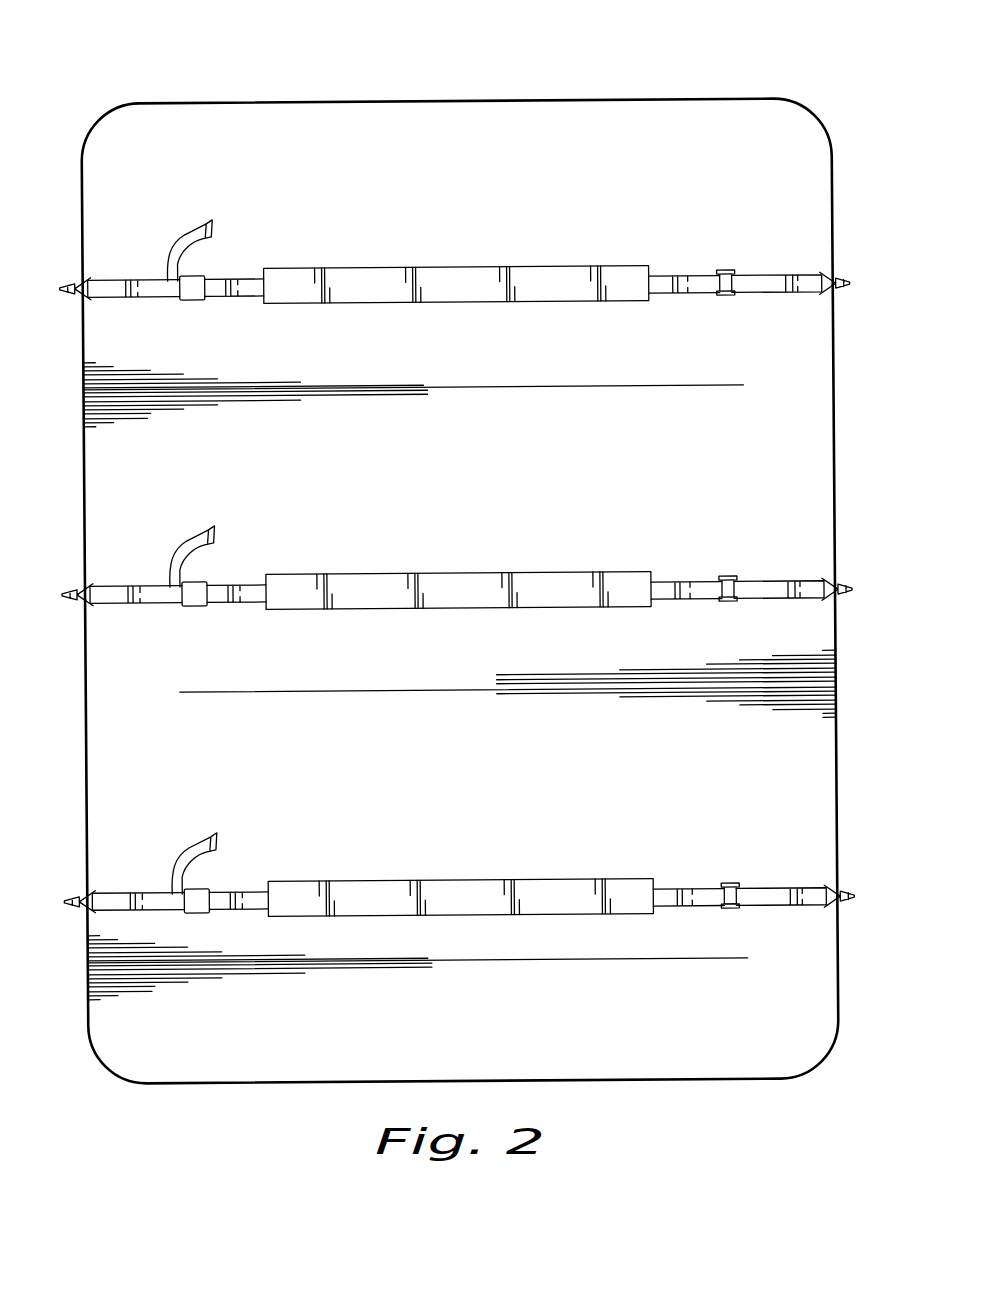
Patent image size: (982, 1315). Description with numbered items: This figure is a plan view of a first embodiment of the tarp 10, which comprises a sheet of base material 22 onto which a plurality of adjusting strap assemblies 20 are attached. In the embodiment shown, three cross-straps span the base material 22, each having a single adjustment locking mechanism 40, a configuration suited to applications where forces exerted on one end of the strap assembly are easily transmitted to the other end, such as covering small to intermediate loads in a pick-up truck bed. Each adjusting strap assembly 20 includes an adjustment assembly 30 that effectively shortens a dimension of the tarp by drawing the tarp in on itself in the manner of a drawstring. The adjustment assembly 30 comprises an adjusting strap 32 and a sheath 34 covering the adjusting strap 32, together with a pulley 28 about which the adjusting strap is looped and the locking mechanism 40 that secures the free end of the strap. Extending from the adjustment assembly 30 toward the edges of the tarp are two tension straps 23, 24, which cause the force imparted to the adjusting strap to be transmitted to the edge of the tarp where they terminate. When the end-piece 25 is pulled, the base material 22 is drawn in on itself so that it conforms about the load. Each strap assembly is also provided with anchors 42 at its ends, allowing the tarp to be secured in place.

The tarp 10 is at (652, 50).
The adjusting strap assembly 20 is at (458, 557).
The base piece 22 is at (478, 760).
The tension strap 23 is at (177, 568).
The tension strap 24 is at (778, 557).
The end-piece 25 is at (191, 534).
The pulley 28 is at (702, 610).
The adjustment assembly 30 is at (456, 570).
The adjusting strap 32 is at (686, 558).
The sheath 34 is at (458, 565).
The locking mechanism 40 is at (193, 613).
The anchor 42 is at (458, 560).